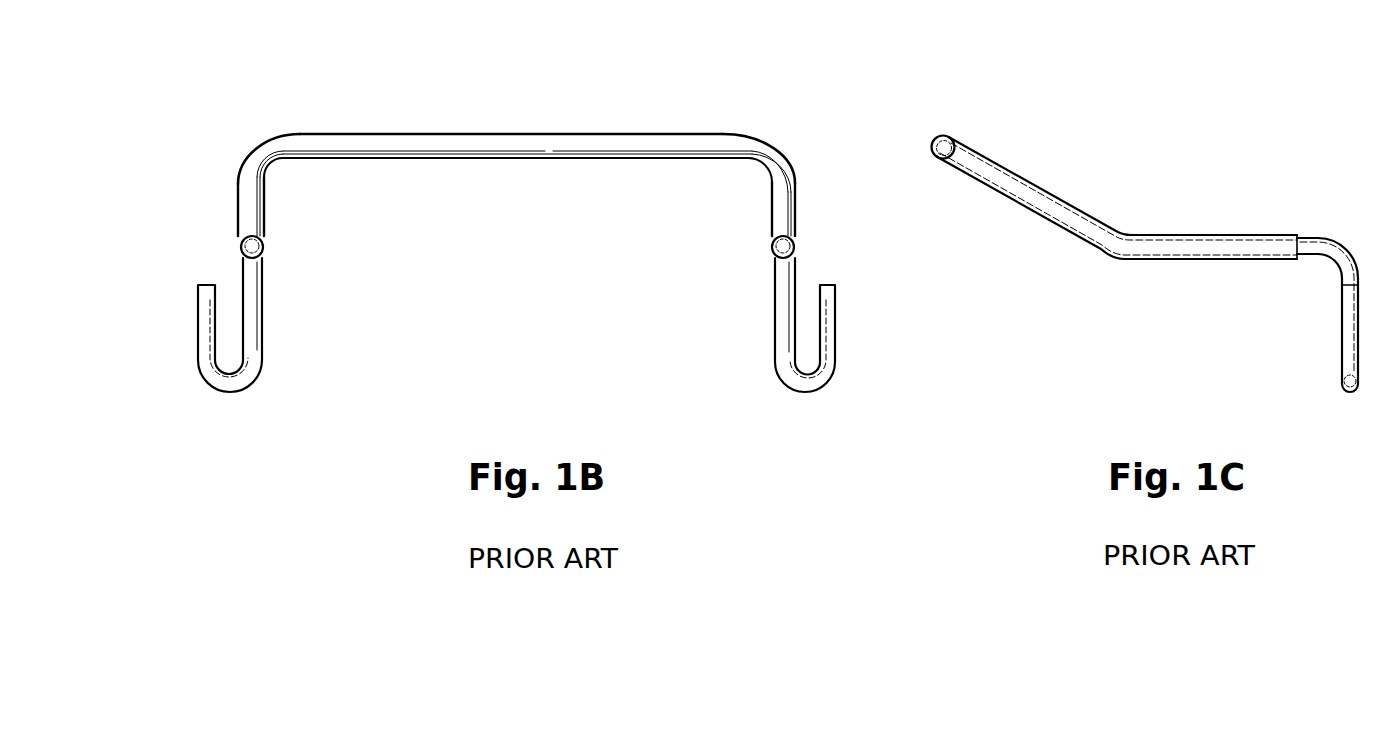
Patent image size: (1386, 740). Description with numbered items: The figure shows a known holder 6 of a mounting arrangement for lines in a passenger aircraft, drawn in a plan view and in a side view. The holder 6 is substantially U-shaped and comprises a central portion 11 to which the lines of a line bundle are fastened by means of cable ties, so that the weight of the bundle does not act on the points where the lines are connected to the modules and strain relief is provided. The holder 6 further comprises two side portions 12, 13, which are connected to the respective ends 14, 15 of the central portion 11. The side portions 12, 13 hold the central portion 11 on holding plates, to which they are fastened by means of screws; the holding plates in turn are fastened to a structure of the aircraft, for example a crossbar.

In FIG. 1B, the holder 6 is at (416, 118).
In FIG. 1C, the holder 6 is at (1287, 185).
In FIG. 1B, the central portion 11 is at (518, 136).
In FIG. 1C, the central portion 11 is at (944, 134).
In FIG. 1B, the side portion 12 is at (790, 220).
In FIG. 1B, the side portion 13 is at (243, 219).
In FIG. 1C, the side portion 13 is at (1140, 245).
In FIG. 1B, the end of the central portion 14 is at (762, 150).
In FIG. 1B, the end of the central portion 15 is at (278, 150).